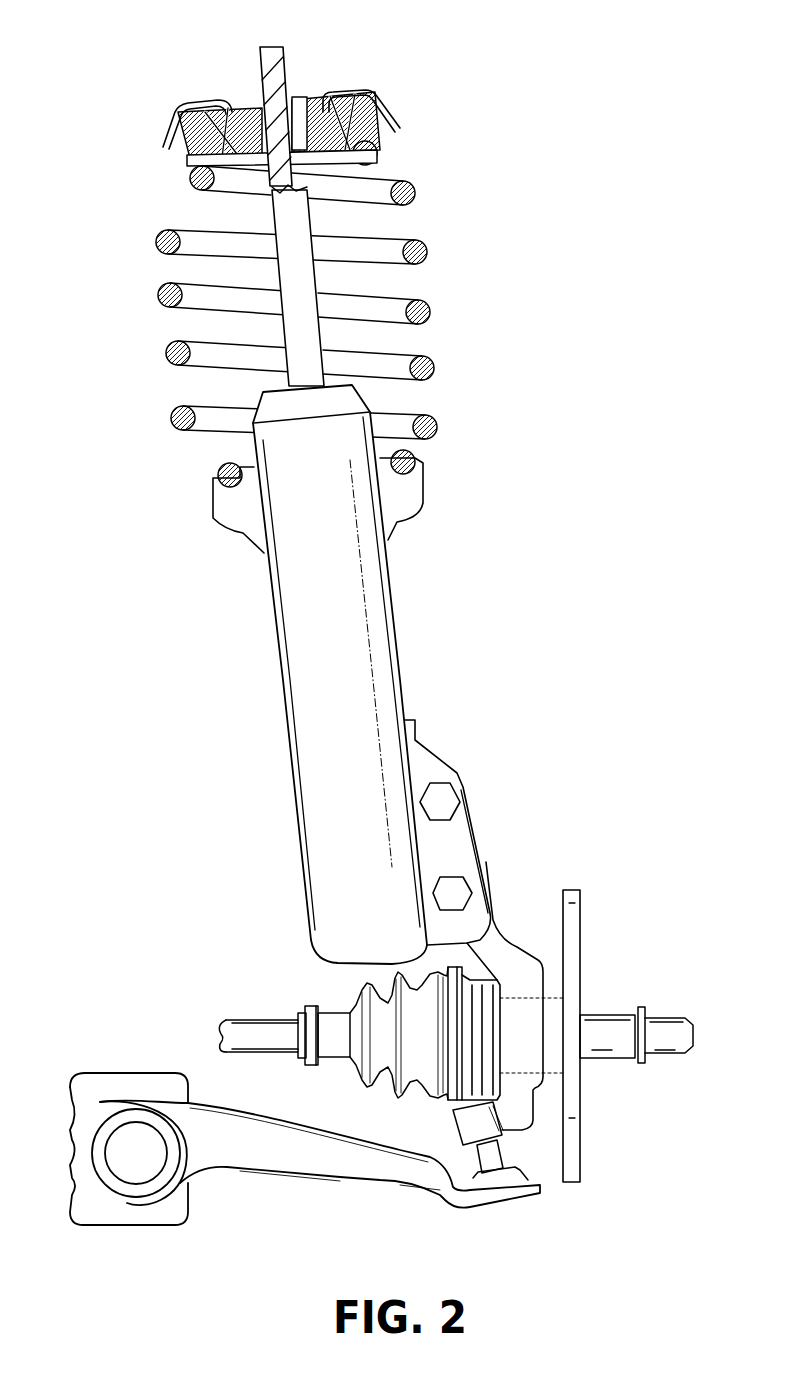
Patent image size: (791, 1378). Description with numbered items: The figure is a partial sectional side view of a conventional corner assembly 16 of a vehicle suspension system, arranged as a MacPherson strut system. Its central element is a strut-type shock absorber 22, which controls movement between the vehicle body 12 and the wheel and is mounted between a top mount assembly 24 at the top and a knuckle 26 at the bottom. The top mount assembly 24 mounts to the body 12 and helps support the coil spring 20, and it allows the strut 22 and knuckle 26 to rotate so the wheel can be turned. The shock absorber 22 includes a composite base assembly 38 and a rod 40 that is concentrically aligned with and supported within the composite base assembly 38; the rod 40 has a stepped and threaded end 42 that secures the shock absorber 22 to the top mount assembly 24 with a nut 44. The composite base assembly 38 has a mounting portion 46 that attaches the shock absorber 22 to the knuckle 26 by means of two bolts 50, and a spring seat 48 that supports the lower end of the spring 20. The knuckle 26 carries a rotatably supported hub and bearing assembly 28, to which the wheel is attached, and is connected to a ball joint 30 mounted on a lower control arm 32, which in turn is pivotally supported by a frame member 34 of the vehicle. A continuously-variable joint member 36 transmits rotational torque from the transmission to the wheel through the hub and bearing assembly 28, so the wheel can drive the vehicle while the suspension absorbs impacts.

The vehicle body 12 is at (344, 99).
The corner assembly 16 is at (566, 266).
The spring 20 is at (425, 230).
The strut-type shock absorber 22 is at (264, 664).
The top mount assembly 24 is at (384, 131).
The knuckle 26 is at (503, 947).
The hub and bearing assembly 28 is at (573, 970).
The ball joint 30 is at (537, 1187).
The lower control arm 32 is at (313, 1153).
The frame member 34 is at (105, 1207).
The continuously-variable joint member 36 is at (338, 995).
The composite base assembly 38 is at (332, 642).
The rod 40 is at (285, 275).
The stepped and threaded end 42 is at (278, 72).
The nut 44 is at (293, 100).
The mounting portion 46 is at (418, 762).
The spring seat 48 is at (410, 497).
The bolts 50 is at (457, 888).